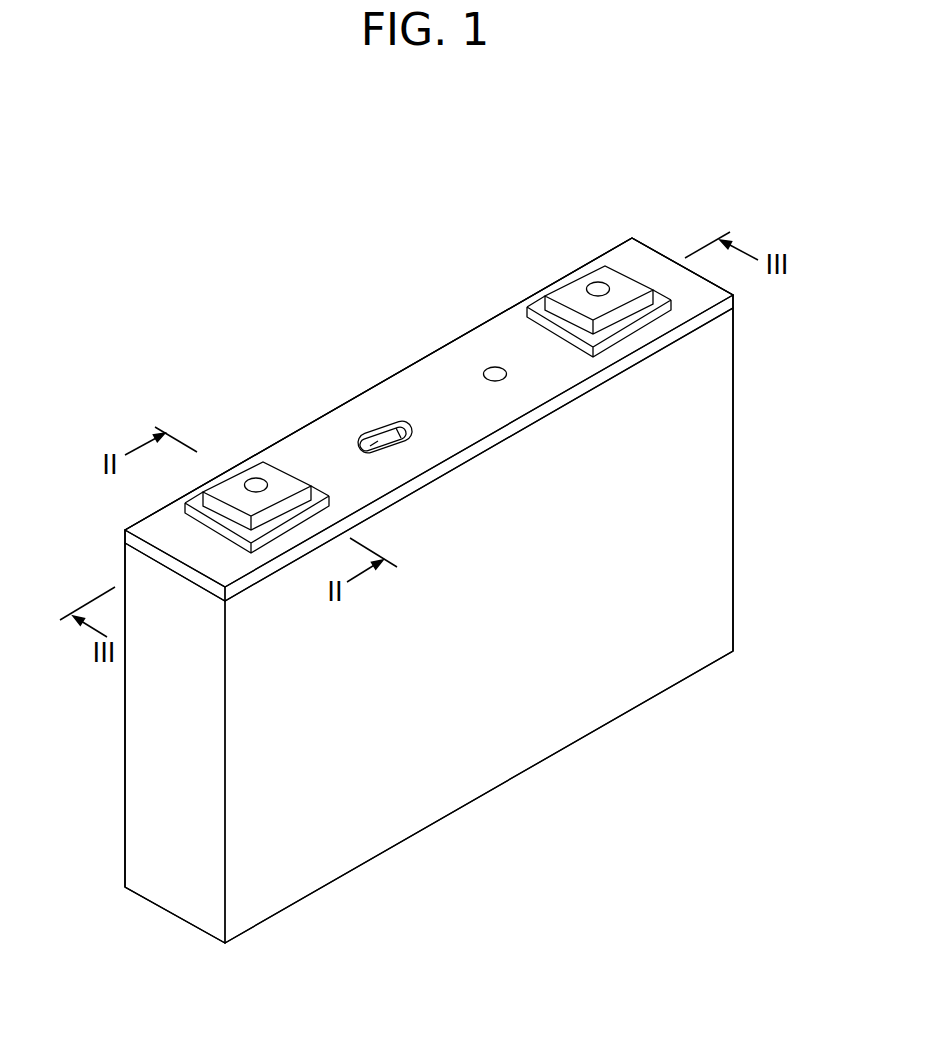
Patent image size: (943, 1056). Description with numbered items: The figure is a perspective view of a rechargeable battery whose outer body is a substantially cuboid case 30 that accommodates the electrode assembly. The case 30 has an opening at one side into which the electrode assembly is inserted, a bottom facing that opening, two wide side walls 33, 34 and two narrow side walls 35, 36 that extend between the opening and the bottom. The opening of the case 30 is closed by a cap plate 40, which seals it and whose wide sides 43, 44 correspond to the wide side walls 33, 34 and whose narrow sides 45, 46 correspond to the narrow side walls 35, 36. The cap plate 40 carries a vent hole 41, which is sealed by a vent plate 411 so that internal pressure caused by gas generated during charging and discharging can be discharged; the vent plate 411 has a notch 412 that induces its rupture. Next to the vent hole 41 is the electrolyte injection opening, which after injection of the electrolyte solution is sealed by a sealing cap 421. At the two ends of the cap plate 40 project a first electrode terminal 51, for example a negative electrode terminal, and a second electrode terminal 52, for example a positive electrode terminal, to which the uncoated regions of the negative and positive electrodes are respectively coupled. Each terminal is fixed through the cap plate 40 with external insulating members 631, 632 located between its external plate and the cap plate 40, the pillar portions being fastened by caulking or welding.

The case 30 is at (747, 522).
The wide side wall 33 is at (485, 725).
The wide side wall 34 is at (125, 718).
The narrow side wall 35 is at (733, 432).
The narrow side wall 36 is at (175, 807).
The cap plate 40 is at (432, 387).
The vent hole 41 is at (360, 442).
The vent plate 411 is at (372, 435).
The notch 412 is at (387, 428).
The sealing cap 421 is at (494, 370).
The wide side of cap plate 43 is at (482, 443).
The wide side of cap plate 44 is at (278, 440).
The narrow side of cap plate 45 is at (668, 253).
The narrow side of cap plate 46 is at (173, 563).
The first electrode terminal 51 is at (224, 462).
The second electrode terminal 52 is at (574, 257).
The external insulating member 631 is at (197, 518).
The external insulating member 632 is at (535, 317).